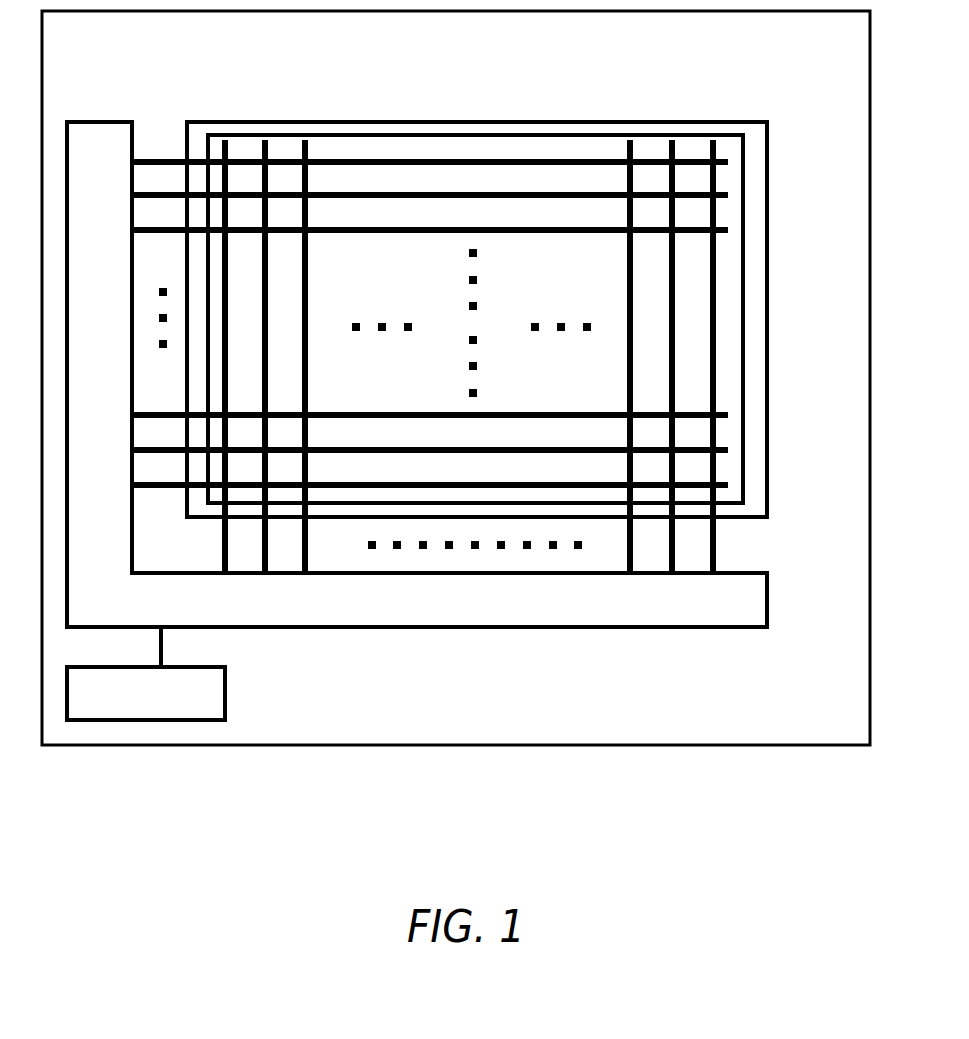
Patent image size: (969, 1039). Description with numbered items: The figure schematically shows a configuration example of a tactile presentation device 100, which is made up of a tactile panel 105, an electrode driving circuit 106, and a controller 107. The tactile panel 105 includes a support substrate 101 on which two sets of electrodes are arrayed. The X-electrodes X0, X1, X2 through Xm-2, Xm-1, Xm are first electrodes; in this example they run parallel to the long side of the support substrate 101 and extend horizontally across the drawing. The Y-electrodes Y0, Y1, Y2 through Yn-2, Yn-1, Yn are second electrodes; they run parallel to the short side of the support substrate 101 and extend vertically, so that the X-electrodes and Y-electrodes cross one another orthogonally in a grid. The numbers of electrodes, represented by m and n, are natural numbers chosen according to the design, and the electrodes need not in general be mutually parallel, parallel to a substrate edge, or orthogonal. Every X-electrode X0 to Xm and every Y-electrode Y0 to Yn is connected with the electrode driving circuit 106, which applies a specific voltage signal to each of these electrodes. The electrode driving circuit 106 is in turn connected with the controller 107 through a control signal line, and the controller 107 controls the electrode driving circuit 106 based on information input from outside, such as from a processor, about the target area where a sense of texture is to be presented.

The tactile presentation device 100 is at (731, 723).
The support substrate 101 is at (768, 122).
The tactile panel 105 is at (751, 520).
The electrode driving circuit 106 is at (382, 627).
The controller 107 is at (226, 700).
The Y-electrode Y0 is at (237, 148).
The Y-electrode Y1 is at (277, 148).
The Y-electrode Y2 is at (317, 148).
The Y-electrode Yn-2 is at (642, 148).
The Y-electrode Yn-1 is at (682, 148).
The Y-electrode Yn is at (722, 148).
The X-electrode X0 is at (730, 168).
The X-electrode X1 is at (730, 202).
The X-electrode X2 is at (730, 238).
The X-electrode Xm-2 is at (728, 422).
The X-electrode Xm-1 is at (728, 457).
The X-electrode Xm is at (728, 493).